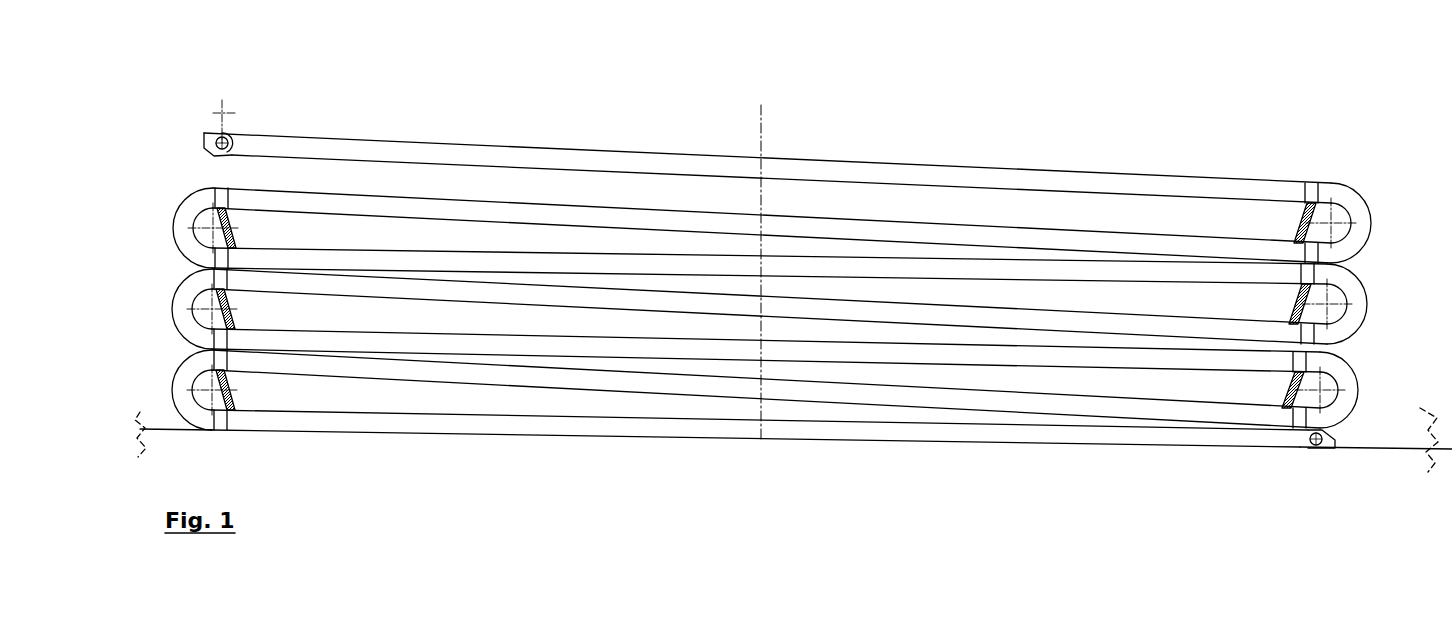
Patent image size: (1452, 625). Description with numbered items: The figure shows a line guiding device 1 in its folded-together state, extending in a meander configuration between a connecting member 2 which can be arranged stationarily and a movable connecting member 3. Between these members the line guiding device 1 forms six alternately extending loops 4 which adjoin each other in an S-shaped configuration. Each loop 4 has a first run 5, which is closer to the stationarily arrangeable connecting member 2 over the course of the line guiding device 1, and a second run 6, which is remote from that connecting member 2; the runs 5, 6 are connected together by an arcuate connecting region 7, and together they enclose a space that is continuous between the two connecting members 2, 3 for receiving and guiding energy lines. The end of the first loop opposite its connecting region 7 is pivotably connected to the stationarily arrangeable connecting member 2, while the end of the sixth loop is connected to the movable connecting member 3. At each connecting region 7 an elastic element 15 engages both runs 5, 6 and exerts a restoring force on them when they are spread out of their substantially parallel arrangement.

The line guiding device 1 is at (884, 133).
The connecting member which can be arranged stationarily 2 is at (1323, 445).
The movable connecting member 3 is at (218, 138).
The loop 4 is at (178, 192).
The first run 5 is at (620, 222).
The second run 6 is at (722, 168).
The arcuate connecting region 7 is at (183, 232).
The elastic element 15 is at (238, 228).